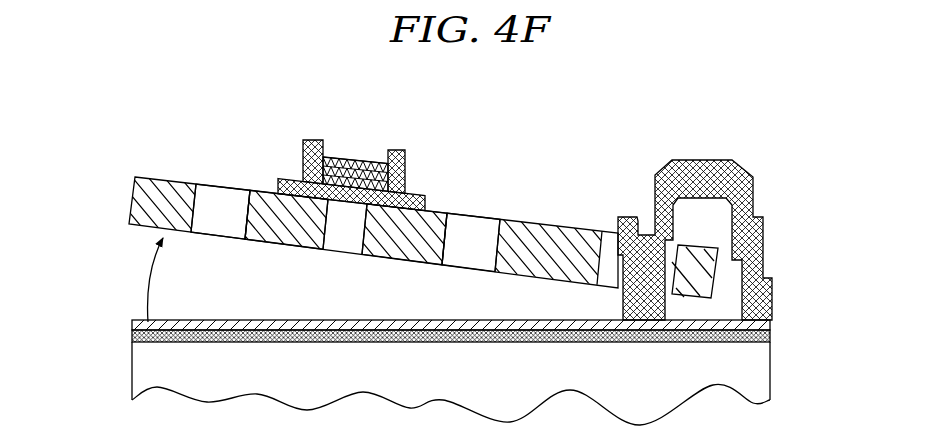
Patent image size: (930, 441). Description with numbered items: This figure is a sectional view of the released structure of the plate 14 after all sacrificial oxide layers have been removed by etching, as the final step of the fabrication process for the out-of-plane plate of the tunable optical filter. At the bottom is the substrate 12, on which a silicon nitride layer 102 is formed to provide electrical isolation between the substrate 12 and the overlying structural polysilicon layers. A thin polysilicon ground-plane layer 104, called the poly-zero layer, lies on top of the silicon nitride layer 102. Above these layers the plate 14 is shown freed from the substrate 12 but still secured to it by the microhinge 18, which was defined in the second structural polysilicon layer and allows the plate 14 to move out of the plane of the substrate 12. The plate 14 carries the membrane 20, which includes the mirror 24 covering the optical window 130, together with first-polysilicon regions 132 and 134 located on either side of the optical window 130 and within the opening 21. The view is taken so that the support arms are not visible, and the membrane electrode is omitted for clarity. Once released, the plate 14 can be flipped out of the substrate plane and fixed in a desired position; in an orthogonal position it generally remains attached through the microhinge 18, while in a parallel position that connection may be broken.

The substrate 12 is at (657, 380).
The plate 14 is at (119, 198).
The microhinge 18 is at (738, 183).
The membrane 20 is at (350, 214).
The opening 21 is at (225, 203).
The mirror 24 is at (339, 155).
The silicon nitride layer 102 is at (763, 333).
The Poly 0 layer 104 is at (763, 326).
The optical window 130 is at (350, 223).
The Poly 1 region 132 is at (256, 213).
The Poly 1 region 134 is at (422, 232).